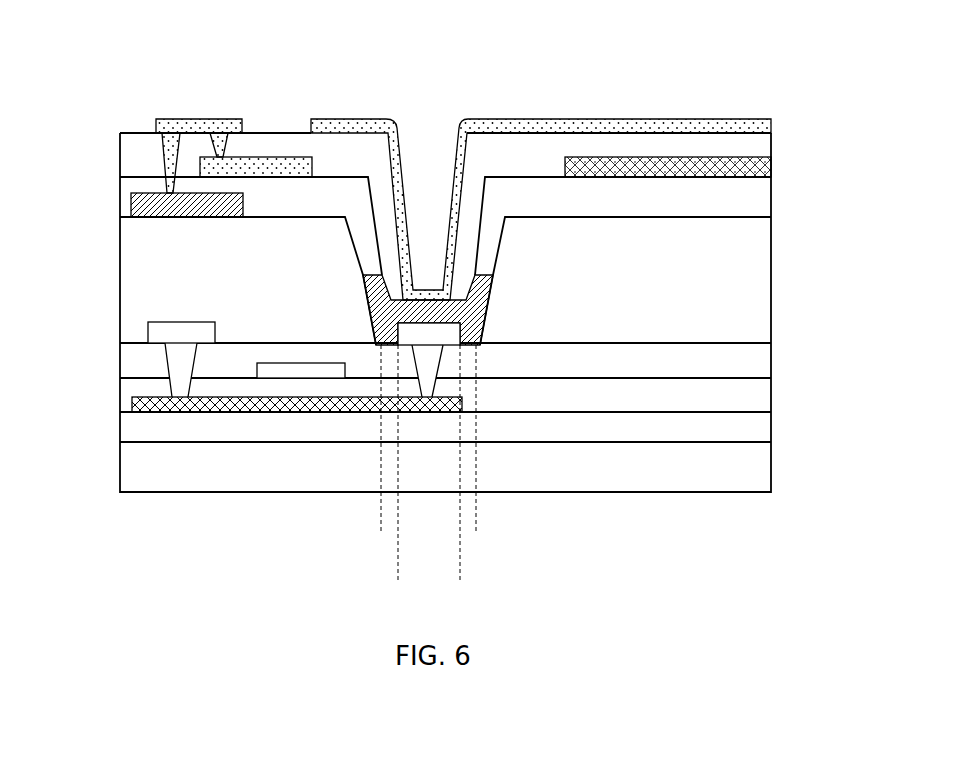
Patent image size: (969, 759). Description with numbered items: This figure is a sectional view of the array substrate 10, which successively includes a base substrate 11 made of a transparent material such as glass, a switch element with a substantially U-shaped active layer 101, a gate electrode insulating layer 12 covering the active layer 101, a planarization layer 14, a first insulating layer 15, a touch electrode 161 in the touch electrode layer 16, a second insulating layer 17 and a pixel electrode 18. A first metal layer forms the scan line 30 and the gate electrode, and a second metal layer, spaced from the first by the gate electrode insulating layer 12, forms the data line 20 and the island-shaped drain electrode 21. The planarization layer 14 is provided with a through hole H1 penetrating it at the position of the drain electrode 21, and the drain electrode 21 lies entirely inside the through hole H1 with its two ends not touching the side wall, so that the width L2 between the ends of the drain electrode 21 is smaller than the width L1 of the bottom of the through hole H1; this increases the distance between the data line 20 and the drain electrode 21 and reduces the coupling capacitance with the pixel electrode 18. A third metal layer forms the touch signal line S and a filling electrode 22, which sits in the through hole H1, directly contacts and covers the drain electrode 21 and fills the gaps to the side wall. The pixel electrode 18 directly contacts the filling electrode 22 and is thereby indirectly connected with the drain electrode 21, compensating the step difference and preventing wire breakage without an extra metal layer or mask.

The array substrate 10 is at (712, 537).
The base substrate 11 is at (723, 468).
The gate electrode insulating layer 12 is at (727, 398).
The active layer 101 is at (190, 397).
The planarization layer 14 is at (697, 273).
The first insulating layer 15 is at (653, 190).
The pixel electrode 16 is at (668, 106).
The touch electrode 161 is at (638, 162).
The second insulating layer 17 is at (585, 145).
The pixel electrode 18 is at (332, 133).
The data line 20 is at (160, 333).
The drain electrode 21 is at (397, 303).
The filling electrode 22 is at (428, 343).
The scan line 30 is at (275, 368).
The touch signal line S is at (168, 202).
The through hole H1 is at (465, 243).
The width of the bottom of the through hole L1 is at (468, 516).
The width between the two ends of the drain electrode L2 is at (265, 562).